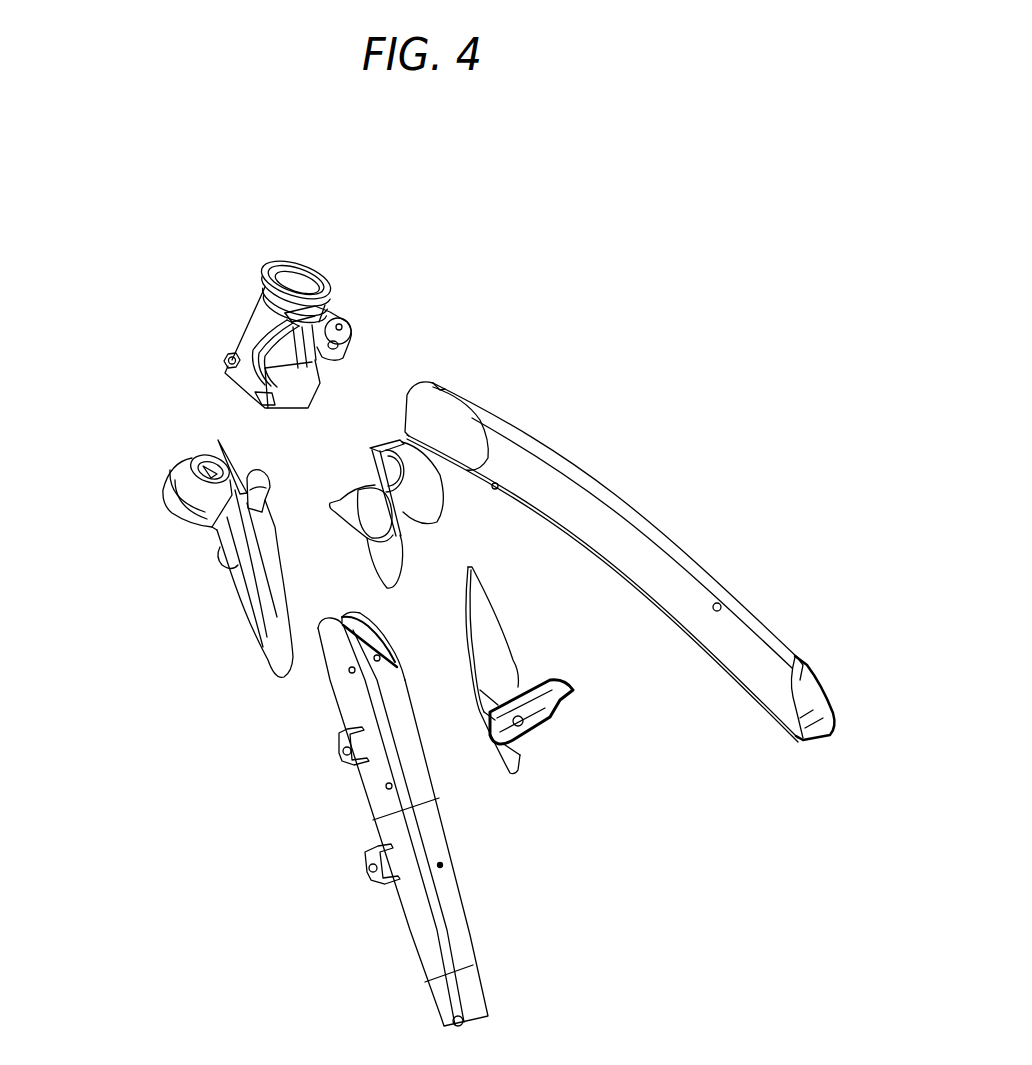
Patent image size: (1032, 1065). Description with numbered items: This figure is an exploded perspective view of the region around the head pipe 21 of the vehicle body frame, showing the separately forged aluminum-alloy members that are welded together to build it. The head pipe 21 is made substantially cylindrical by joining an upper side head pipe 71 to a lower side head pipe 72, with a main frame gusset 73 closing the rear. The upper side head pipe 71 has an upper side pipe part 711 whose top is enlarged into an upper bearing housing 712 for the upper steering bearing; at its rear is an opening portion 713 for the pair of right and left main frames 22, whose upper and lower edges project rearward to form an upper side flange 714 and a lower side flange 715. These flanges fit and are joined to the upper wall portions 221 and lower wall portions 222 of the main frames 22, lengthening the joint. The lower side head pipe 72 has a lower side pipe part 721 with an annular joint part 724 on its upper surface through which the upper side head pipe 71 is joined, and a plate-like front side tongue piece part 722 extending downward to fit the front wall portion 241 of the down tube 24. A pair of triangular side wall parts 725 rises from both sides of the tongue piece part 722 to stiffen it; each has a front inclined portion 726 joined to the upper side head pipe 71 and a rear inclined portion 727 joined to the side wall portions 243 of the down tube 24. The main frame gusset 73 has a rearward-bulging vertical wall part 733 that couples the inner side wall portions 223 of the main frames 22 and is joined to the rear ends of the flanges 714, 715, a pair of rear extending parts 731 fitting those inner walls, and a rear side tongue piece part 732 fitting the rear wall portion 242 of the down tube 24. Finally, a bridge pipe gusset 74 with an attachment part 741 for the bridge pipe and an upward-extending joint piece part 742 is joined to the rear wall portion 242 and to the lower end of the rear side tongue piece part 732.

The head pipe 21 is at (126, 359).
The main frames 22 is at (700, 529).
The upper wall portions 221 is at (568, 465).
The lower wall portions 222 is at (528, 510).
The inner side wall portions 223 is at (577, 513).
The down tube 24 is at (461, 869).
The front wall portion 241 is at (336, 708).
The rear wall portion 242 is at (399, 710).
The side wall portions 243 is at (377, 798).
The upper side head pipe 71 is at (309, 242).
The upper side pipe part 711 is at (250, 318).
The upper bearing housing 712 is at (278, 258).
The opening portion 713 is at (290, 353).
The upper side flange 714 is at (333, 308).
The lower side flange 715 is at (272, 404).
The lower side head pipe 72 is at (153, 469).
The lower side pipe part 721 is at (163, 490).
The front side tongue piece part 722 is at (268, 627).
The joint part 724 is at (205, 458).
The side wall parts 725 is at (258, 497).
The front inclined portion 726 is at (222, 472).
The rear inclined portion 727 is at (237, 515).
The main frame gusset 73 is at (365, 441).
The rear extending parts 731 is at (427, 507).
The rear side tongue piece part 732 is at (393, 565).
The vertical wall part 733 is at (392, 455).
The bridge pipe gusset 74 is at (547, 647).
The attachment part 741 is at (560, 697).
The joint piece part 742 is at (490, 622).